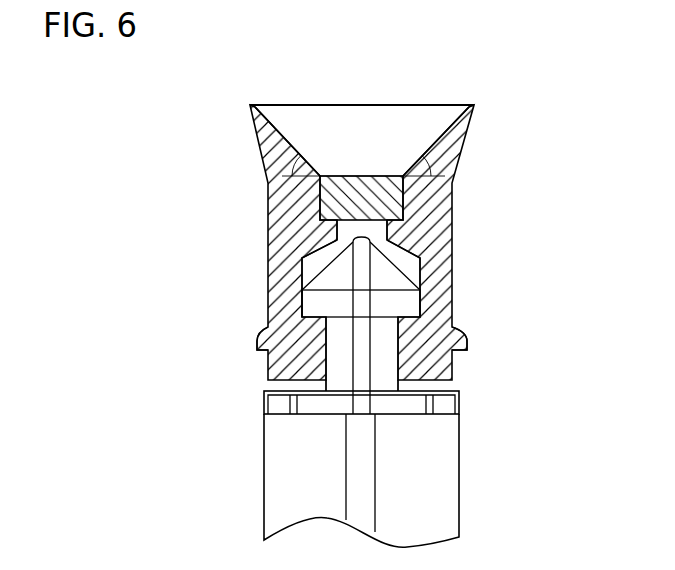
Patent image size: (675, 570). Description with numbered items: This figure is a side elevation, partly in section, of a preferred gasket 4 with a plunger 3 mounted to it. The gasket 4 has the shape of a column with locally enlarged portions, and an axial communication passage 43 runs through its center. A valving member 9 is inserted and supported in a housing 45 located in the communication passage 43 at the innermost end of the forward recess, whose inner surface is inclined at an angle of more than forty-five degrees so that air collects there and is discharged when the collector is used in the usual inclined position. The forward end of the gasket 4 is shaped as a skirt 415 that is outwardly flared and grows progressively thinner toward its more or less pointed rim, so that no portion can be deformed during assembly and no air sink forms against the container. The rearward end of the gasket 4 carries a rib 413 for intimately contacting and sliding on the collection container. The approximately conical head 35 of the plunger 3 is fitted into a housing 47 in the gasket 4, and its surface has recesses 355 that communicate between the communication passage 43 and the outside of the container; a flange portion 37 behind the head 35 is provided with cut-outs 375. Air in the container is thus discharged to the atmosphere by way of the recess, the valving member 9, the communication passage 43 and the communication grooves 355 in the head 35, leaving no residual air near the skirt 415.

The plunger 3 is at (438, 500).
The gasket 4 is at (290, 205).
The valving member 9 is at (371, 192).
The head 35 is at (397, 280).
The flange portion 37 is at (452, 410).
The communication passage 43 is at (327, 258).
The housing 45 is at (403, 192).
The housing 47 is at (415, 330).
The recesses 355 is at (357, 364).
The cut-outs 375 is at (292, 411).
The rib 413 is at (257, 343).
The skirt 415 is at (253, 110).